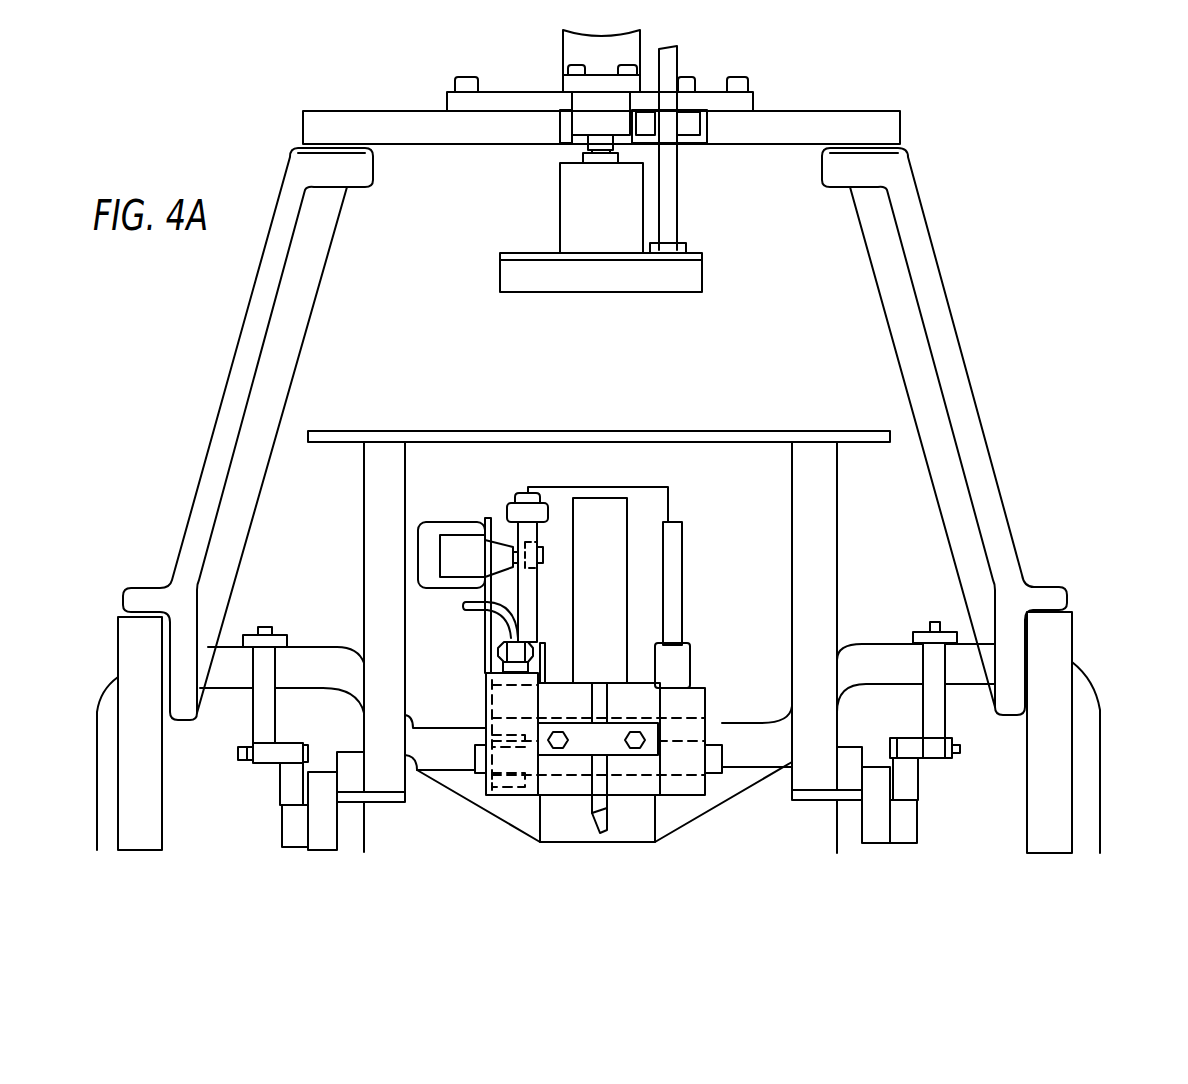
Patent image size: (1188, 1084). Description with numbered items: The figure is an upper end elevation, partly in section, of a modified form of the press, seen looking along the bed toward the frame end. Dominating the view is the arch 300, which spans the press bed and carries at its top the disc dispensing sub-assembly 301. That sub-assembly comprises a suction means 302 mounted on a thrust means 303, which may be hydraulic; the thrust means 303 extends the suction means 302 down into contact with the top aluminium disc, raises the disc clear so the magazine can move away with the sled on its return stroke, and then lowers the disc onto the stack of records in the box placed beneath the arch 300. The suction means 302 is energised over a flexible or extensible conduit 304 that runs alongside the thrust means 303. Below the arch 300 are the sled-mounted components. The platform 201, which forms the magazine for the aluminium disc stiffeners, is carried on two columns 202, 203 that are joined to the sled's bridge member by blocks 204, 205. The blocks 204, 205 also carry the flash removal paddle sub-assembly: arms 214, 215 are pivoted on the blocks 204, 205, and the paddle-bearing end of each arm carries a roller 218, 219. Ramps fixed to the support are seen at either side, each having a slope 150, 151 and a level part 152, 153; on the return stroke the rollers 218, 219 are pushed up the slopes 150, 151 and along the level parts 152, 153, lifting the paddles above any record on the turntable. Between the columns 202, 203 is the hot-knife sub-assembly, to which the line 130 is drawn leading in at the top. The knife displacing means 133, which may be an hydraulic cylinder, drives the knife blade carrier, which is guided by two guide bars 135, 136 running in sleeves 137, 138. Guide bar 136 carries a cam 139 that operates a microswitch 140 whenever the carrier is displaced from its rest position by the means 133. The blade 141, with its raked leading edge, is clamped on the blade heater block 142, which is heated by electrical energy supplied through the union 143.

The arch 300 is at (330, 267).
The disc dispensing sub-assembly 301 is at (565, 152).
The suction means 302 is at (702, 268).
The thrust means 303 is at (563, 63).
The flexible or extensible conduit 304 is at (686, 75).
The platform 201 is at (758, 430).
The column 202 is at (364, 494).
The column 203 is at (838, 491).
The block 204 is at (367, 827).
The block 205 is at (834, 824).
The supply line 130 is at (672, 492).
The knife displacing means 133 is at (628, 498).
The guide bar 135 is at (683, 563).
The guide bar 136 is at (518, 540).
The sleeve 137 is at (692, 663).
The sleeve 138 is at (547, 665).
The cam 139 is at (541, 503).
The microswitch 140 is at (452, 537).
The blade 141 is at (612, 820).
The blade heater block 142 is at (707, 707).
The union 143 is at (498, 652).
The slope 150 is at (912, 773).
The slope 151 is at (283, 773).
The level part 152 is at (907, 745).
The level part 153 is at (287, 746).
The arm 214 is at (317, 823).
The arm 215 is at (877, 823).
The roller 218 is at (292, 838).
The roller 219 is at (907, 840).